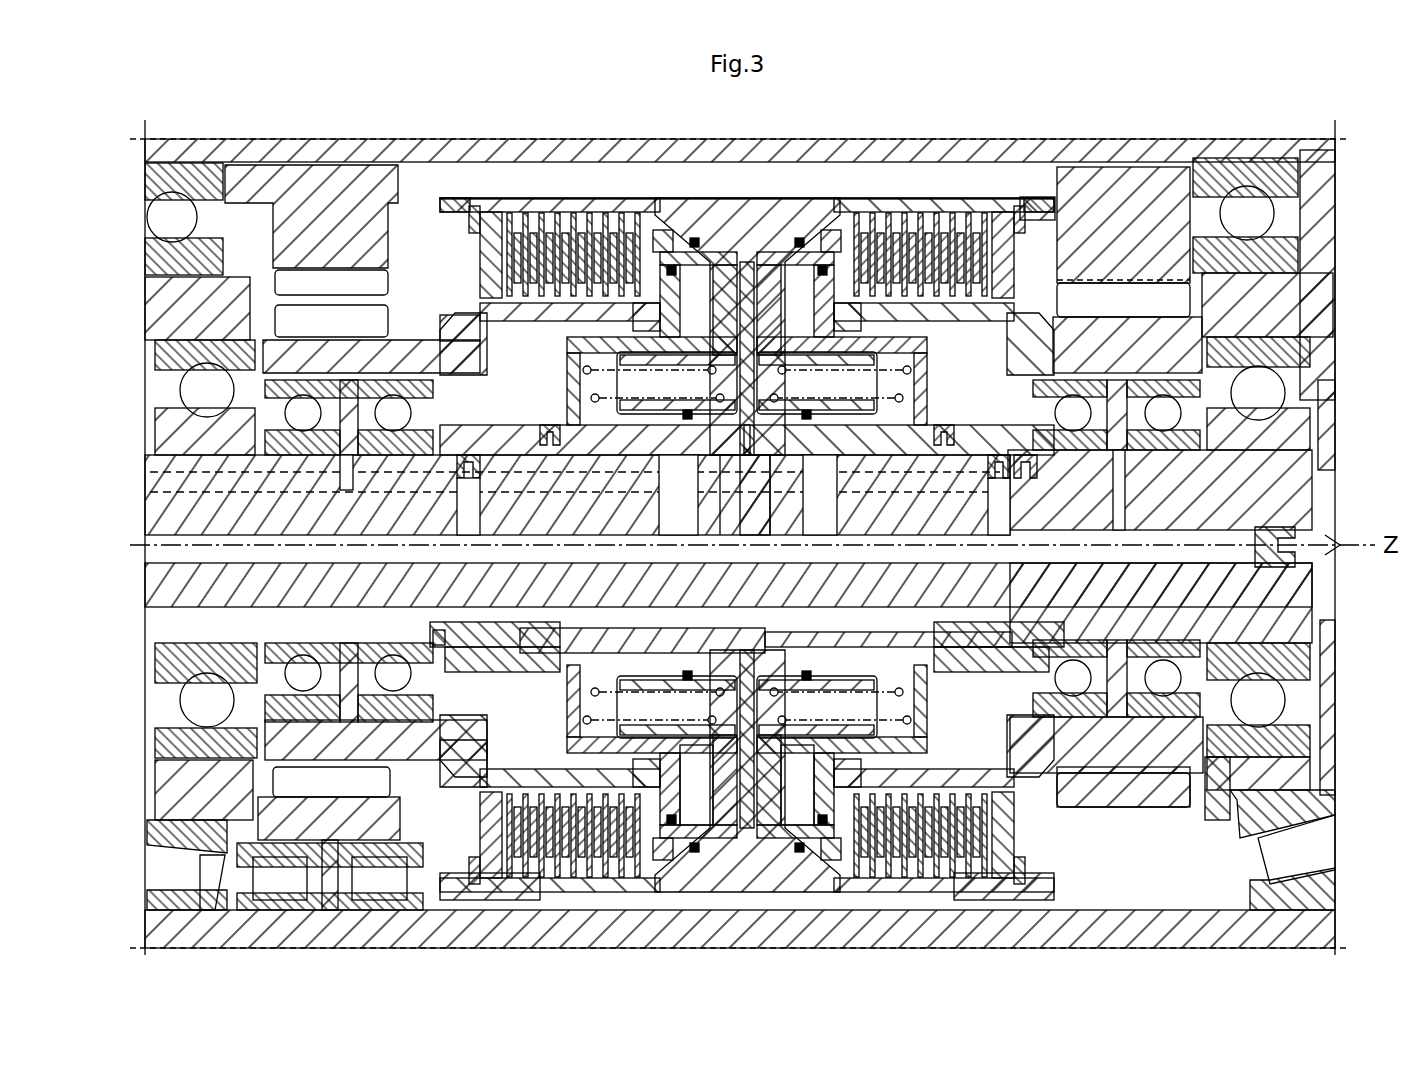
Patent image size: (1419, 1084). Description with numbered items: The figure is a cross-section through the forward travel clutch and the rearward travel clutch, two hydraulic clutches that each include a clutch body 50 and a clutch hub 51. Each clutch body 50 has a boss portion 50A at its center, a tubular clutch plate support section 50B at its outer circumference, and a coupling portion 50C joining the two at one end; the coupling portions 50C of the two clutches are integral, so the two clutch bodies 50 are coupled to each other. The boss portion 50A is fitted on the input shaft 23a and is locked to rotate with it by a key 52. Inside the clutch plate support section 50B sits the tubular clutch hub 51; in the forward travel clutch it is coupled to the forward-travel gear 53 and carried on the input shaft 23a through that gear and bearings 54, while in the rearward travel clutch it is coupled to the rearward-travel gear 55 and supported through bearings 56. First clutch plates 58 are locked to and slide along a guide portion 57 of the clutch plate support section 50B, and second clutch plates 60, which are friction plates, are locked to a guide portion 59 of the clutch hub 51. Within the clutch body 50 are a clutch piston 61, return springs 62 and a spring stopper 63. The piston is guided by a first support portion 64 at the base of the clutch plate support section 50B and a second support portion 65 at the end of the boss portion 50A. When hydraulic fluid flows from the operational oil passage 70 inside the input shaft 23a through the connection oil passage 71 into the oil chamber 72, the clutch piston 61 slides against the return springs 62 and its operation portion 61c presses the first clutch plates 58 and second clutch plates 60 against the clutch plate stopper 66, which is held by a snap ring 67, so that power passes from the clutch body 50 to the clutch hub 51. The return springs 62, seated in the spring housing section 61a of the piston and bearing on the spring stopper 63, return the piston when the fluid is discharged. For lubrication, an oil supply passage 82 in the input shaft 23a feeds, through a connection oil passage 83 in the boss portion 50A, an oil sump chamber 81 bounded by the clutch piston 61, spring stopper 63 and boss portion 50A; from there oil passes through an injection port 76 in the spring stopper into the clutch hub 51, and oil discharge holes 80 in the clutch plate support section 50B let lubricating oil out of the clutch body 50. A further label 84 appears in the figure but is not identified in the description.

The input shaft 23a is at (1305, 598).
The clutch body 50 is at (298, 200).
The boss portion 50A is at (468, 470).
The clutch plate support section 50B is at (458, 200).
The coupling portion 50C is at (750, 250).
The clutch hub 51 is at (520, 320).
The key 52 is at (610, 640).
The forward-travel gear 53 is at (1200, 352).
The bearings 54 is at (1082, 455).
The rearward-travel gear 55 is at (290, 355).
The bearings 56 is at (298, 440).
The guide portion 57 is at (515, 250).
The first clutch plates 58 is at (505, 250).
The guide portion 59 is at (475, 310).
The second clutch plates 60 is at (540, 200).
The clutch piston 61 is at (712, 295).
The spring housing section 61a is at (475, 752).
The operation portion 61c is at (663, 235).
The return springs 62 is at (590, 410).
The spring stopper 63 is at (560, 382).
The first support portion 64 is at (722, 240).
The second support portion 65 is at (770, 495).
The clutch plate stopper 66 is at (480, 275).
The snap ring 67 is at (475, 215).
The operational oil passage 70 is at (595, 513).
The connection oil passage 71 is at (770, 632).
The oil chamber 72 is at (712, 745).
The injection port 76 is at (560, 428).
The oil discharge holes 80 is at (610, 200).
The oil sump chamber 81 is at (680, 398).
The oil supply passage 82 is at (352, 570).
The connection oil passage 83 is at (772, 495).
The oil chamber 84 is at (483, 409).